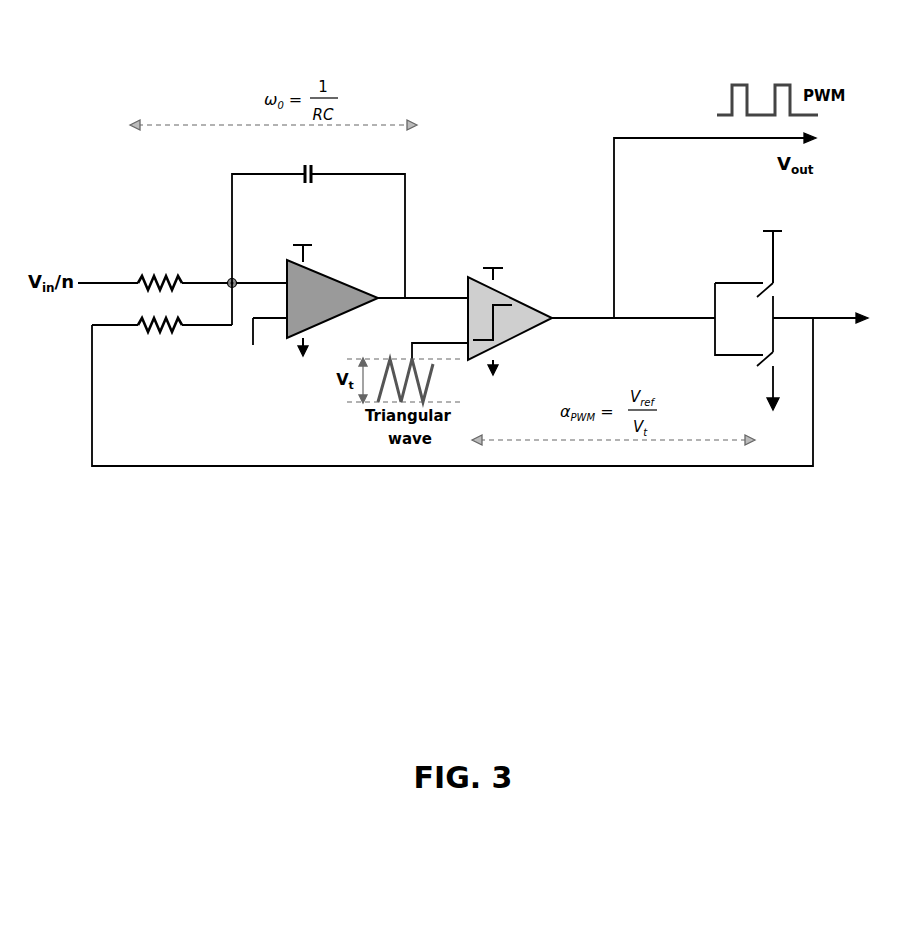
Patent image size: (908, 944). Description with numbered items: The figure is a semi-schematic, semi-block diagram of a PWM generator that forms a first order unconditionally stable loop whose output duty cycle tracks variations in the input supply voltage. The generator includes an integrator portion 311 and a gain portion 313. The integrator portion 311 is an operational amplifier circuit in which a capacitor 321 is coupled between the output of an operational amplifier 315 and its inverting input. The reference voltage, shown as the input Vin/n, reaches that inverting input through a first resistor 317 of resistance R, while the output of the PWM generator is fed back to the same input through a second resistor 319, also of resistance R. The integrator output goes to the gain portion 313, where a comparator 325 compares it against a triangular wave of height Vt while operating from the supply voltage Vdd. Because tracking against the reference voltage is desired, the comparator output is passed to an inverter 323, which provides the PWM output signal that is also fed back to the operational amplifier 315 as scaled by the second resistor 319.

The integrator portion 311 is at (414, 160).
The gain portion 313 is at (512, 204).
The operational amplifier 315 is at (333, 280).
The first resistor 317 is at (148, 277).
The second resistor 319 is at (158, 333).
The capacitor 321 is at (318, 168).
The inverter 323 is at (775, 305).
The comparator 325 is at (513, 298).